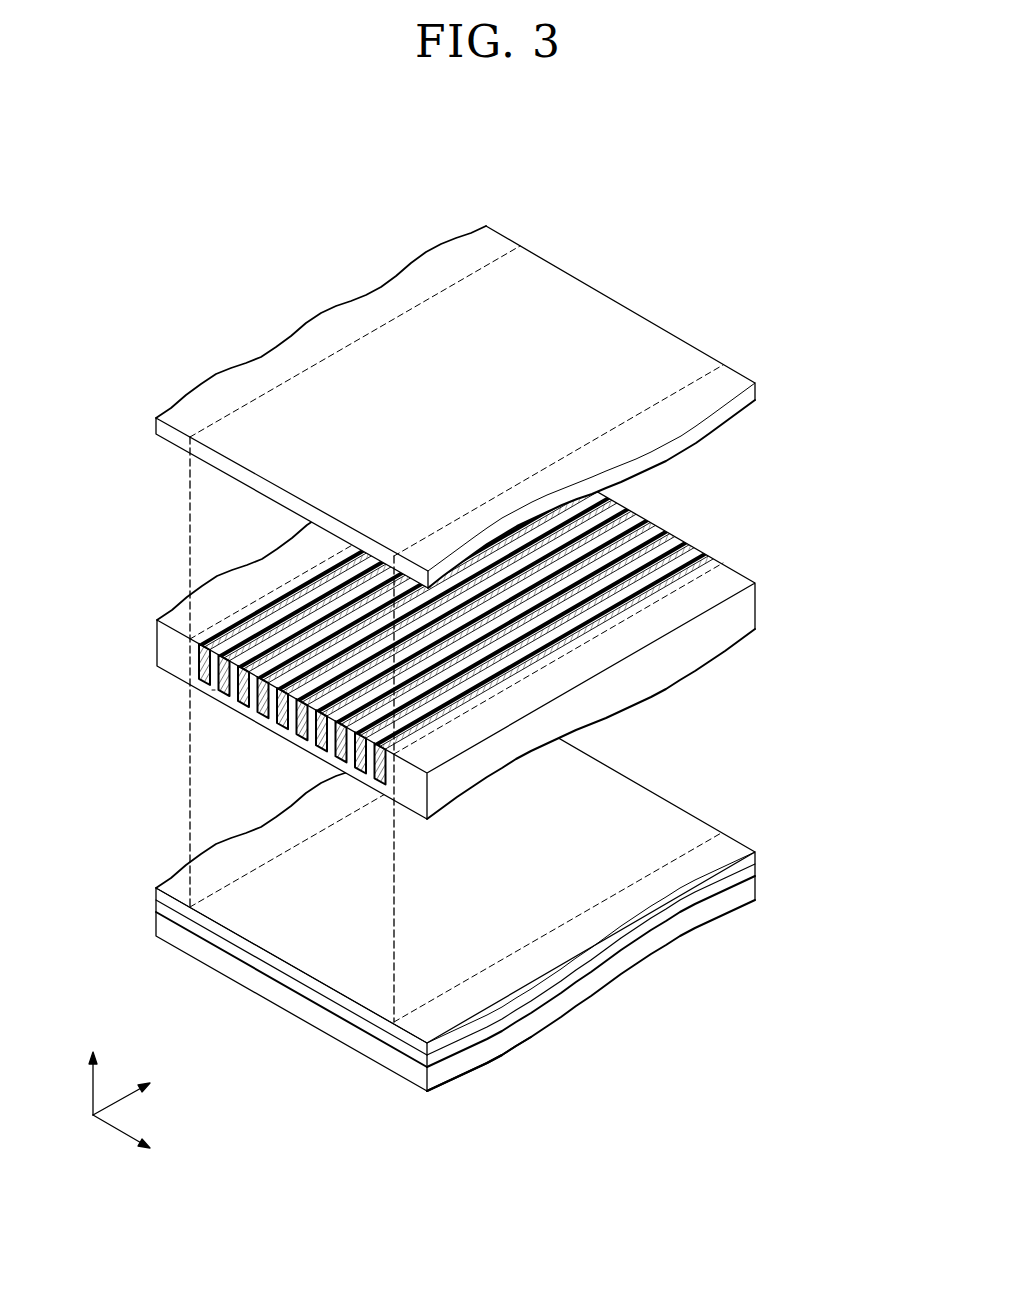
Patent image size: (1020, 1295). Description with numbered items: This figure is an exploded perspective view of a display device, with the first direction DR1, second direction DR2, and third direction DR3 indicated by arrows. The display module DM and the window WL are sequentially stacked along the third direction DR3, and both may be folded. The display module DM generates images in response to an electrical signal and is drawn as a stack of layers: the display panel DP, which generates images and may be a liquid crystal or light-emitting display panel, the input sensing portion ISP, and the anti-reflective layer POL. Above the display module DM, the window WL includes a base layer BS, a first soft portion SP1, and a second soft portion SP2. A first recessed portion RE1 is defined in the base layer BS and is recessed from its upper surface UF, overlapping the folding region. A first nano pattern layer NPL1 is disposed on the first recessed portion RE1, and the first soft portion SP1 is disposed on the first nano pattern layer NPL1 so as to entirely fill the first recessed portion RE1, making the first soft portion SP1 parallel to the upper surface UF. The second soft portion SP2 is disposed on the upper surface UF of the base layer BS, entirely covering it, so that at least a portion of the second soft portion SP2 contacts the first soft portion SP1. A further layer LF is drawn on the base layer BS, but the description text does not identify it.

The second soft portion SP2 is at (495, 407).
The window WL is at (477, 522).
The base layer BS is at (441, 610).
The upper surface UF is at (178, 615).
The first soft portion SP1 is at (505, 576).
The first nano pattern layer NPL1 is at (201, 651).
The light blocking film LF is at (182, 682).
The first recessed portion RE1 is at (218, 689).
The anti-reflective layer POL is at (749, 858).
The input sensing portion ISP is at (749, 872).
The display panel DP is at (749, 893).
The display module DM is at (522, 893).
The first direction DR1 is at (146, 1142).
The second direction DR2 is at (146, 1091).
The third direction DR3 is at (98, 1071).